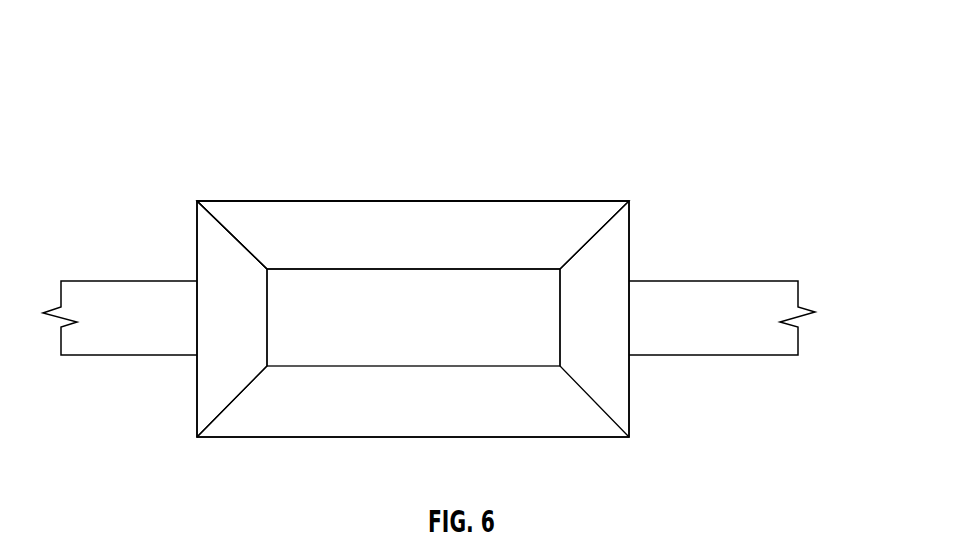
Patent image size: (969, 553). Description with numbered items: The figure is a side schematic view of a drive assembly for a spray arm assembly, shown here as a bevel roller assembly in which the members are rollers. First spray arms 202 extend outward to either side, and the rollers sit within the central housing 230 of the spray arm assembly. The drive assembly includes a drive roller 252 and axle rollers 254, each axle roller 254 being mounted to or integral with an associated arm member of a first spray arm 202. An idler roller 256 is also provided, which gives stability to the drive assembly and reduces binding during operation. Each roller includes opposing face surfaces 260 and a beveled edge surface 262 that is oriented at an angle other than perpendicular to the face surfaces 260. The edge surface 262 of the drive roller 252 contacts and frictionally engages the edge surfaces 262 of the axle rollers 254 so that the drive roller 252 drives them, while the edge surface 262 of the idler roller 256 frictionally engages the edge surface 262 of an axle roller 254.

The first spray arm 202 is at (107, 272).
The central housing 230 is at (647, 84).
The drive roller 252 is at (535, 420).
The axle roller 254 is at (614, 265).
The idler roller 256 is at (463, 213).
The face surface 260 is at (197, 262).
The beveled edge surface 262 is at (227, 229).